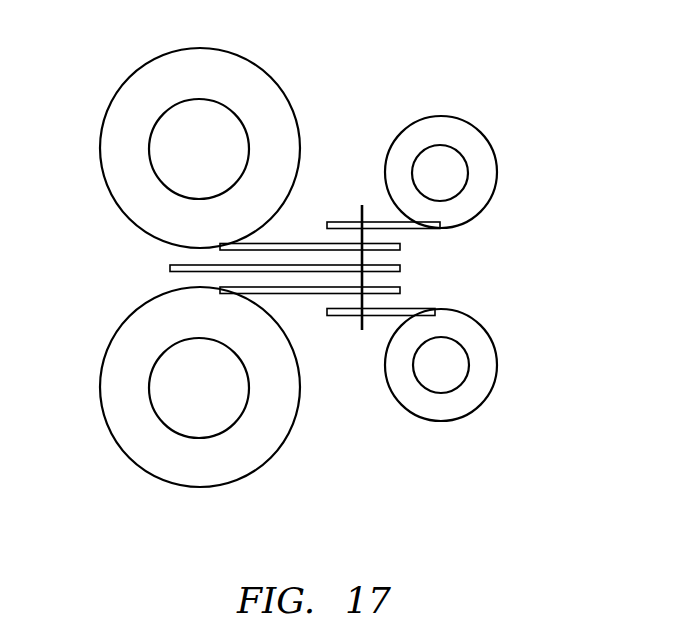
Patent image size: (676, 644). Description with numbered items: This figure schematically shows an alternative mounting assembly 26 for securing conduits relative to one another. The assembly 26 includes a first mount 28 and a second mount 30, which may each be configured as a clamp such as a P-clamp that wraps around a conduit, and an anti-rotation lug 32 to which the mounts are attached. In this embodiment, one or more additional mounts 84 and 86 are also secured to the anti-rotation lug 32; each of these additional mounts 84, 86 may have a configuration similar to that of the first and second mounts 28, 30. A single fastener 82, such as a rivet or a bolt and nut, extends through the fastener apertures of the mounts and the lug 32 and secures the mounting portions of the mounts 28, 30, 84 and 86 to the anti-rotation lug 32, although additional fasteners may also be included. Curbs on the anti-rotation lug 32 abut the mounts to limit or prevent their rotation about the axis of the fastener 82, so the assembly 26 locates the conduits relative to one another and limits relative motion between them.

The mounting assembly 26 is at (483, 231).
The first mount 28 is at (110, 475).
The second mount 30 is at (503, 136).
The anti-rotation lug 32 is at (140, 268).
The fastener 82 is at (360, 213).
The additional mount 84 is at (497, 312).
The additional mount 86 is at (113, 63).